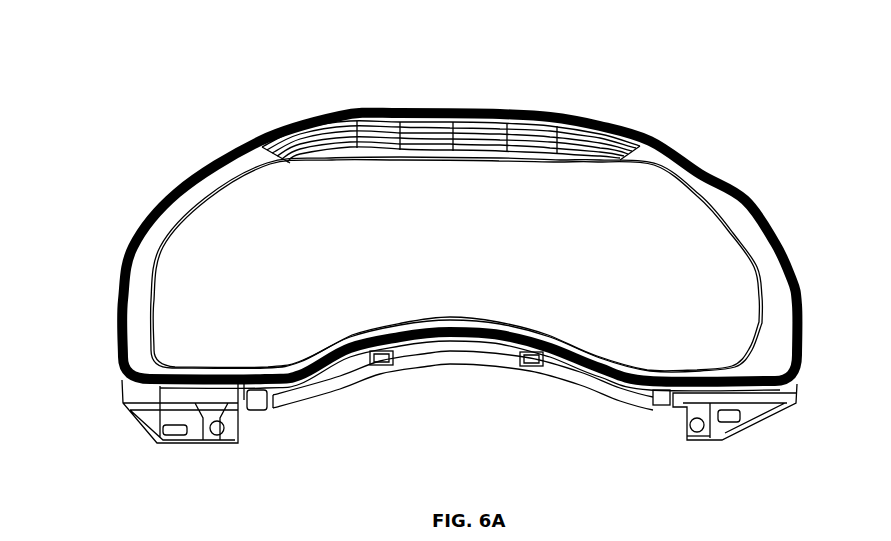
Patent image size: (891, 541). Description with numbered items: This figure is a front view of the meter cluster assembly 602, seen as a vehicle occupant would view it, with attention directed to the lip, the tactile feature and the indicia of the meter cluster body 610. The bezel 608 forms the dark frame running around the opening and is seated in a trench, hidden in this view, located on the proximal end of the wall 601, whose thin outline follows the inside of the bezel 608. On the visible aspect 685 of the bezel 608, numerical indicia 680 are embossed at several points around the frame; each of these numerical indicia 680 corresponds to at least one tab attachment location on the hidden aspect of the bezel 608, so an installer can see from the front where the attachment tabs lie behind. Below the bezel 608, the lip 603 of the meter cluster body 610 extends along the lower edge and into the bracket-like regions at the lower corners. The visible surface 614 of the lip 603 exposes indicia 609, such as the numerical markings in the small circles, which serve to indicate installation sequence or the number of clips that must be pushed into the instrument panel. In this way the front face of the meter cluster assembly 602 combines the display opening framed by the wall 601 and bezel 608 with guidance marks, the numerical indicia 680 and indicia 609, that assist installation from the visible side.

The meter cluster assembly 602 is at (184, 125).
The numerical indicia 680 is at (465, 230).
The visible aspect of the bezel 685 is at (708, 151).
The bezel 608 is at (632, 127).
The meter cluster body 610 is at (314, 286).
The wall 601 is at (147, 332).
The lip 603 is at (764, 417).
The indicia 609 is at (679, 424).
The visible surface of the lip 614 is at (707, 449).